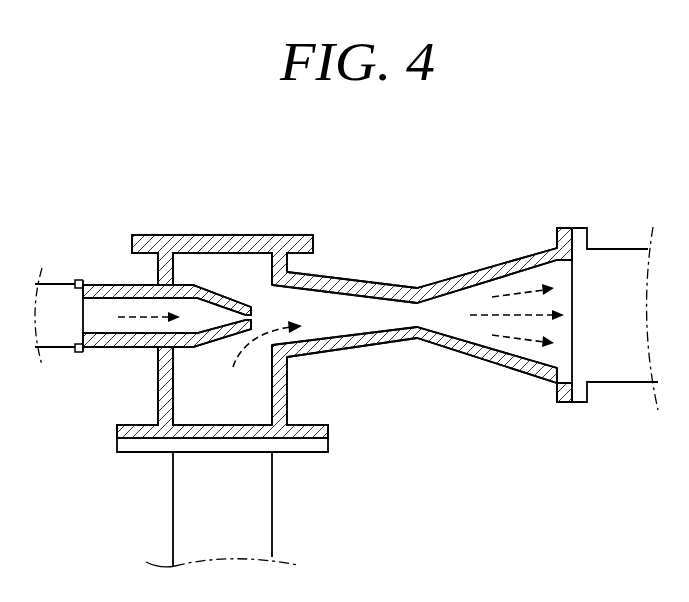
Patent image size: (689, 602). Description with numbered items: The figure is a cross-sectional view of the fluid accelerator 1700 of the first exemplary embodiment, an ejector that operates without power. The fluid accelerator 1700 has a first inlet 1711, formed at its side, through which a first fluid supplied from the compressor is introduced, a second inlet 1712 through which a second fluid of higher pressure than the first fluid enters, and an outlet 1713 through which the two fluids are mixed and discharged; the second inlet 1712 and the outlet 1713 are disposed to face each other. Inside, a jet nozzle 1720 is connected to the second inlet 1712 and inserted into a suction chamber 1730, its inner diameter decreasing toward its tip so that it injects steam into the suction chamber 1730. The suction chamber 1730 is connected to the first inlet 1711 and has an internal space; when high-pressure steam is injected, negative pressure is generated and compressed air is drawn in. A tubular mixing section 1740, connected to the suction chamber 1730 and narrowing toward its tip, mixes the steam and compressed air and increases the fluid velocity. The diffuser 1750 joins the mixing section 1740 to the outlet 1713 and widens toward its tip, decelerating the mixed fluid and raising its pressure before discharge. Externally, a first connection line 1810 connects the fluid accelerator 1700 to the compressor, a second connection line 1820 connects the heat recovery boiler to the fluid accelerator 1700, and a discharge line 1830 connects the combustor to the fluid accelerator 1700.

The fluid accelerator 1700 is at (283, 186).
The first inlet 1711 is at (220, 440).
The second inlet 1712 is at (83, 317).
The outlet 1713 is at (567, 298).
The jet nozzle 1720 is at (207, 290).
The suction chamber 1730 is at (238, 385).
The mixing section 1740 is at (360, 292).
The diffuser 1750 is at (483, 283).
The first connection line 1810 is at (255, 526).
The second connection line 1820 is at (57, 298).
The discharge line 1830 is at (621, 367).